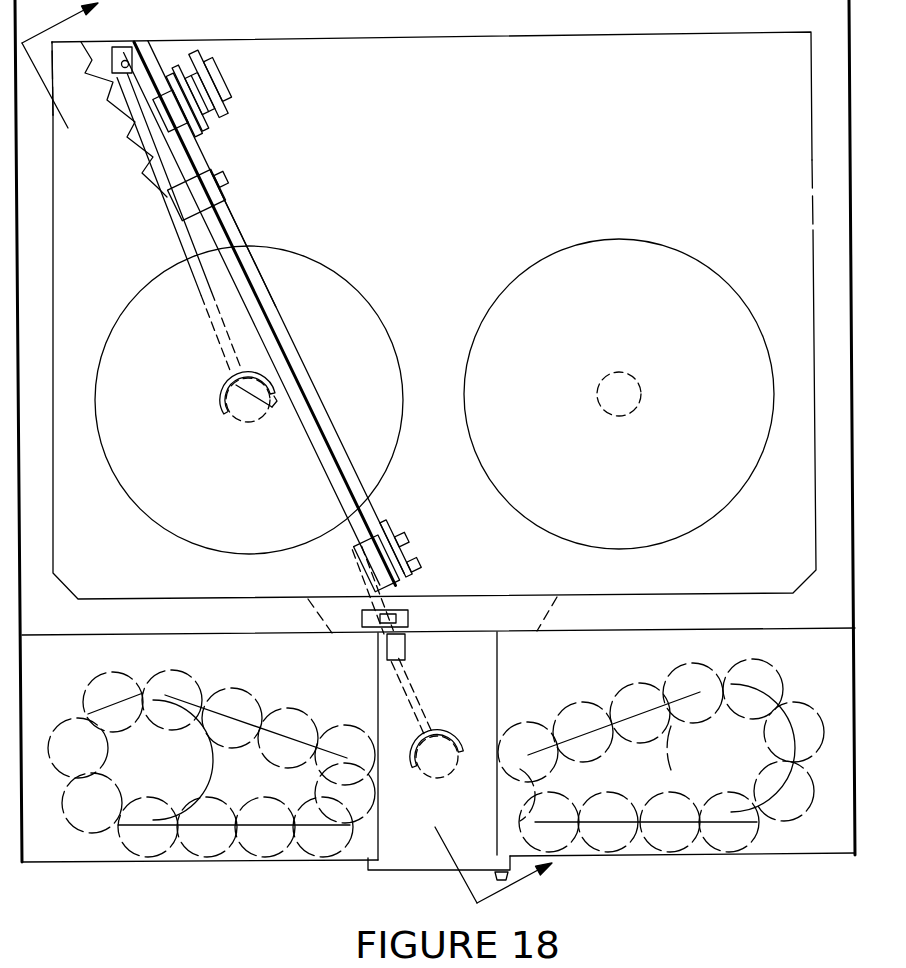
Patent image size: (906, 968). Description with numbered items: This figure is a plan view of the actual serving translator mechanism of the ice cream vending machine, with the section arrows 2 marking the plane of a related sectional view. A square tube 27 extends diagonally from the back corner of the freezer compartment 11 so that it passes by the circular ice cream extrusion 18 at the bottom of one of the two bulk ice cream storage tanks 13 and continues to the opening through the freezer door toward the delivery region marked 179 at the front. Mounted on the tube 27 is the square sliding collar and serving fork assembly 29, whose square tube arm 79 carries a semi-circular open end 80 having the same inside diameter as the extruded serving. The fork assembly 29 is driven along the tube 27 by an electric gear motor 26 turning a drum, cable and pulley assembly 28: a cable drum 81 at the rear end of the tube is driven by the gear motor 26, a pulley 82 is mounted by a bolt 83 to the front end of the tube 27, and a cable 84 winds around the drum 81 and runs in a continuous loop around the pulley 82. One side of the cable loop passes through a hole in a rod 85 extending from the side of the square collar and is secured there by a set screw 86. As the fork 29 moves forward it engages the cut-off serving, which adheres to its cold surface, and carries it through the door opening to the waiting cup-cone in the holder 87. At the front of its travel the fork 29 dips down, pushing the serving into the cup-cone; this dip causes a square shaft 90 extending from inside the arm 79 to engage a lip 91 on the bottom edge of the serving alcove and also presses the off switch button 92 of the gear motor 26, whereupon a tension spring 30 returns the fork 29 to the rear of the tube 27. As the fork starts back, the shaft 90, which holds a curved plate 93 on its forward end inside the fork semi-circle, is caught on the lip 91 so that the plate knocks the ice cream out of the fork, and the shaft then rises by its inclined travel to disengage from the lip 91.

The section line 2- 2 is at (287, 460).
The freezer compartment 11 is at (485, 38).
The bulk ice cream storage tank 13 is at (340, 272).
The circular ice cream extrusion 18 is at (237, 424).
The electric gear motor 26 is at (233, 85).
The square tube 27 is at (323, 463).
The drum, cable and pulley assembly 28 is at (250, 218).
The square sliding collar and serving fork assembly 29 is at (152, 205).
The tension spring 30 is at (140, 158).
The square tube arm 79 is at (180, 246).
The semi-circular open end 80 is at (225, 418).
The cable drum 81 is at (158, 98).
The pulley 82 is at (427, 580).
The bolt 83 is at (420, 562).
The cable 84 is at (303, 355).
The rod 85 is at (222, 200).
The set screw 86 is at (220, 188).
The holder 87 is at (457, 766).
The square shaft 90 is at (219, 348).
The lip 91 is at (409, 646).
The off switch button 92 is at (410, 618).
The curved plate 93 is at (272, 410).
The panel 179 is at (476, 682).